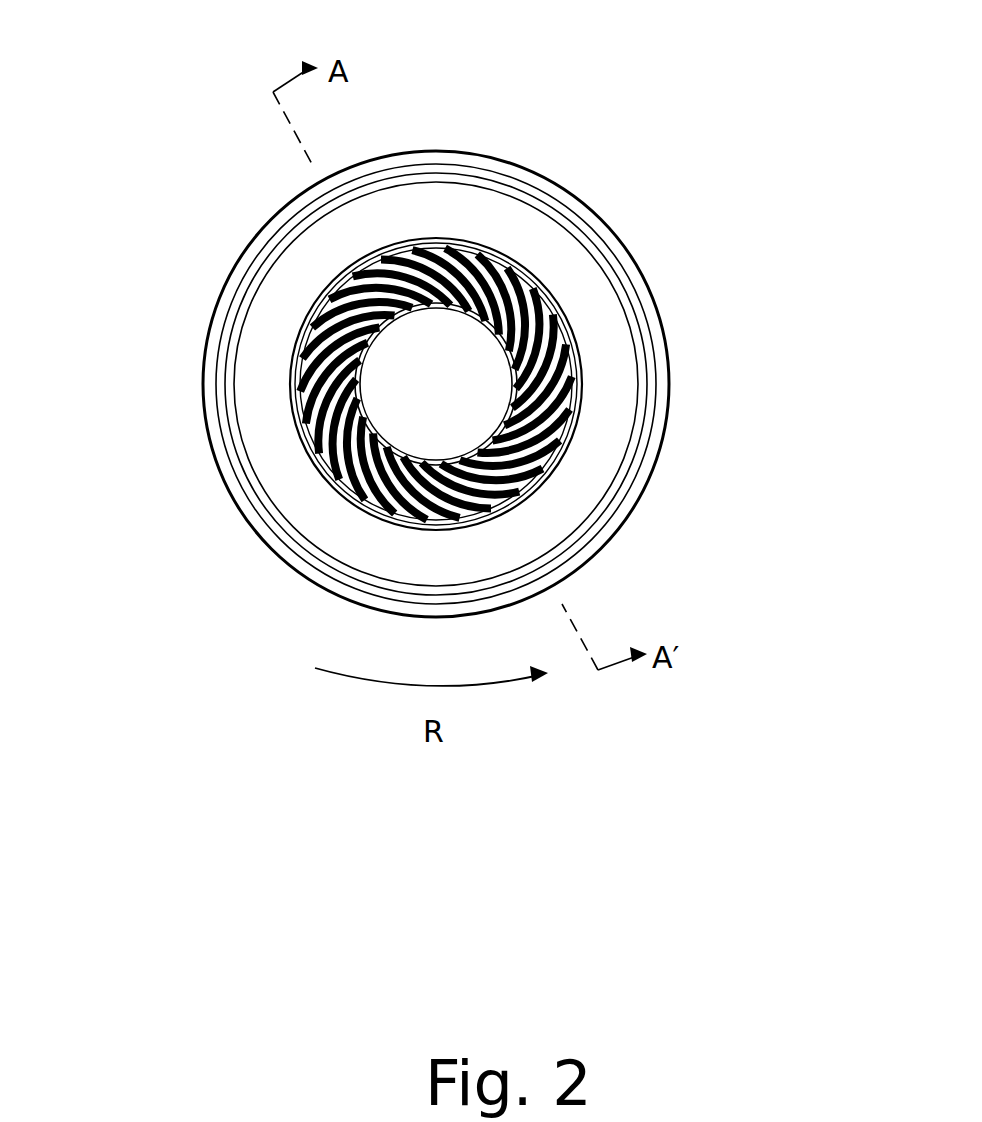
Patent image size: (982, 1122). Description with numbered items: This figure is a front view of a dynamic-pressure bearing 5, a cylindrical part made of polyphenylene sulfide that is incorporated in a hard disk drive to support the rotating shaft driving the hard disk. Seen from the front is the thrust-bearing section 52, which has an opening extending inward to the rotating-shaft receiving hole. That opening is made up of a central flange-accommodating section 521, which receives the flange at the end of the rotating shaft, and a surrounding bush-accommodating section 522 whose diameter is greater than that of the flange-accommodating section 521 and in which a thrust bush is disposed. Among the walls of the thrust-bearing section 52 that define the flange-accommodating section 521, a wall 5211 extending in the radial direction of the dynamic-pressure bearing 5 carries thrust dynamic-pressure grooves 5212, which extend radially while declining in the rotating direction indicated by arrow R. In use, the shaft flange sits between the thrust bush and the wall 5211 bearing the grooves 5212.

The dynamic-pressure bearing 5 is at (656, 106).
The thrust-bearing section 52 is at (652, 268).
The bush-accommodating section 522 is at (650, 368).
The flange-accommodating section 521 is at (419, 384).
The wall 5211 is at (300, 436).
The thrust dynamic-pressure grooves 5212 is at (310, 380).